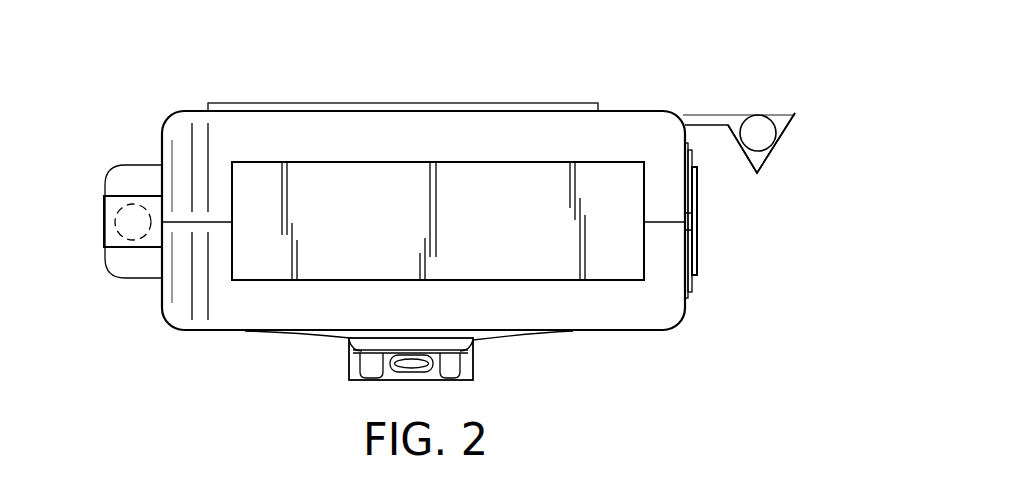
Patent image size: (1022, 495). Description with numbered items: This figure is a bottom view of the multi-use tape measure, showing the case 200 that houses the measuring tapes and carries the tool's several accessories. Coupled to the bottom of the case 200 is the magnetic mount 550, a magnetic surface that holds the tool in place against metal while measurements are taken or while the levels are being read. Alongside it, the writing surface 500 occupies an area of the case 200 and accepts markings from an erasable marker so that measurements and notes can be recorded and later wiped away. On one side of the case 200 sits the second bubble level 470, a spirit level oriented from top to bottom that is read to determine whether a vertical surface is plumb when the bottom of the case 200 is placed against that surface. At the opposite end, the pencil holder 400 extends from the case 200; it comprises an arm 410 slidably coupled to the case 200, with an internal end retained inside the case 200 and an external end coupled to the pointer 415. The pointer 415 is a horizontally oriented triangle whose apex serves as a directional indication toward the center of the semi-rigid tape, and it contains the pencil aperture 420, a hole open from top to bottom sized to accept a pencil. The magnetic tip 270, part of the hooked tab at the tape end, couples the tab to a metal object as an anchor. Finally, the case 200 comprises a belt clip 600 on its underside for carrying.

The case 200 is at (627, 331).
The magnetic tip 270 is at (697, 255).
The pencil holder 400 is at (743, 89).
The arm 410 is at (685, 115).
The pointer 415 is at (788, 128).
The pencil aperture 420 is at (775, 113).
The second bubble level 470 is at (97, 166).
The writing surface 500 is at (260, 103).
The magnetic mount 550 is at (358, 195).
The belt clip 600 is at (348, 362).